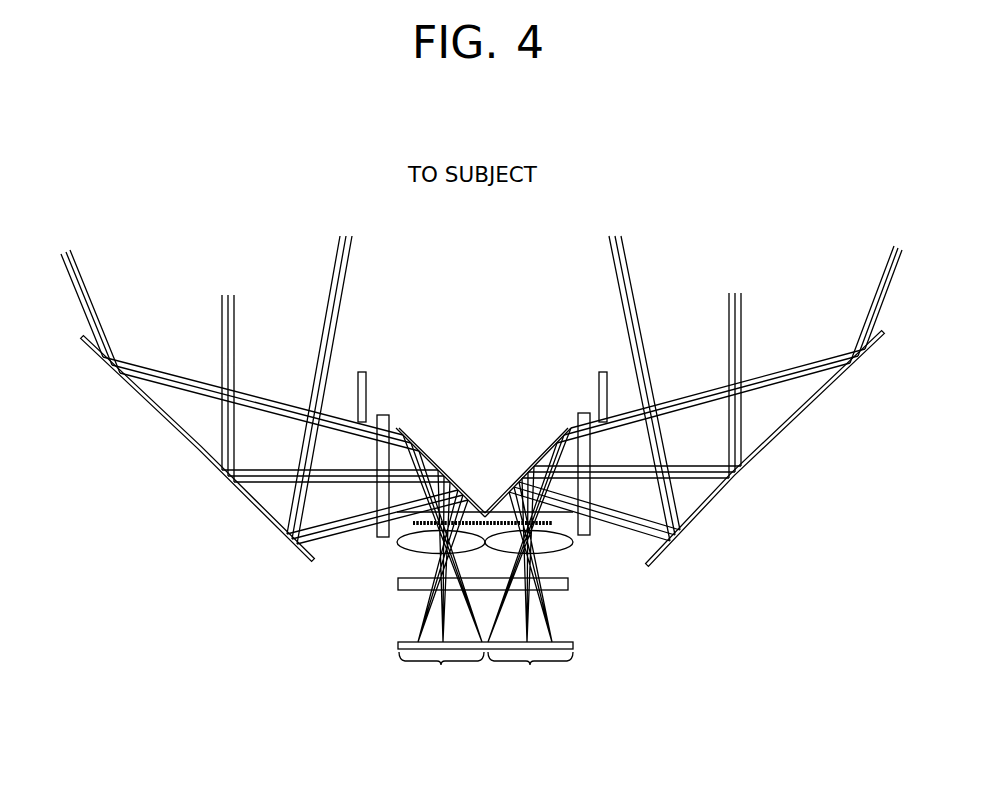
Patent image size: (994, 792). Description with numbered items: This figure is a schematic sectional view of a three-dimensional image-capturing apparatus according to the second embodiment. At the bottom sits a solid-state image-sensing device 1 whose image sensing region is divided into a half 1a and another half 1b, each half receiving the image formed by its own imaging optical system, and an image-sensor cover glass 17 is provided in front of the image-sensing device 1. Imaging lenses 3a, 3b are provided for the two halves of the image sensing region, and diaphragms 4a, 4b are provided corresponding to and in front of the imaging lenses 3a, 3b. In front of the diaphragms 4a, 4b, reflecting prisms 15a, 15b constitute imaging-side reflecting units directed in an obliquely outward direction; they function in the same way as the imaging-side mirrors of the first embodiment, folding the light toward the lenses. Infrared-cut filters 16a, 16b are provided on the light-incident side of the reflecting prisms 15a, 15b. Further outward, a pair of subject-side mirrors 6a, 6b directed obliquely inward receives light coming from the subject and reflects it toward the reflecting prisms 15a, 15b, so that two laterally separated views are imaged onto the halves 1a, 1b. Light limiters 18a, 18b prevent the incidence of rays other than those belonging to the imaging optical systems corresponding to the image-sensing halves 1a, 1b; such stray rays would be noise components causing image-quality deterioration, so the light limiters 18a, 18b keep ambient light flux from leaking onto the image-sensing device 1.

The solid-state image-sensing device 1 is at (401, 637).
The half of the image sensing region 1a is at (441, 675).
The half of the image sensing region 1b is at (530, 675).
The imaging lens 3a is at (403, 546).
The imaging lens 3b is at (572, 544).
The diaphragm 4a is at (413, 525).
The diaphragm 4b is at (556, 523).
The subject-side mirror 6a is at (162, 418).
The subject-side mirror 6b is at (806, 412).
The reflecting prism 15a is at (415, 445).
The reflecting prism 15b is at (555, 445).
The infrared-cut filter 16a is at (378, 530).
The infrared-cut filter 16b is at (592, 530).
The image-sensor cover glass 17 is at (569, 584).
The light limiter 18a is at (362, 392).
The light limiter 18b is at (604, 392).